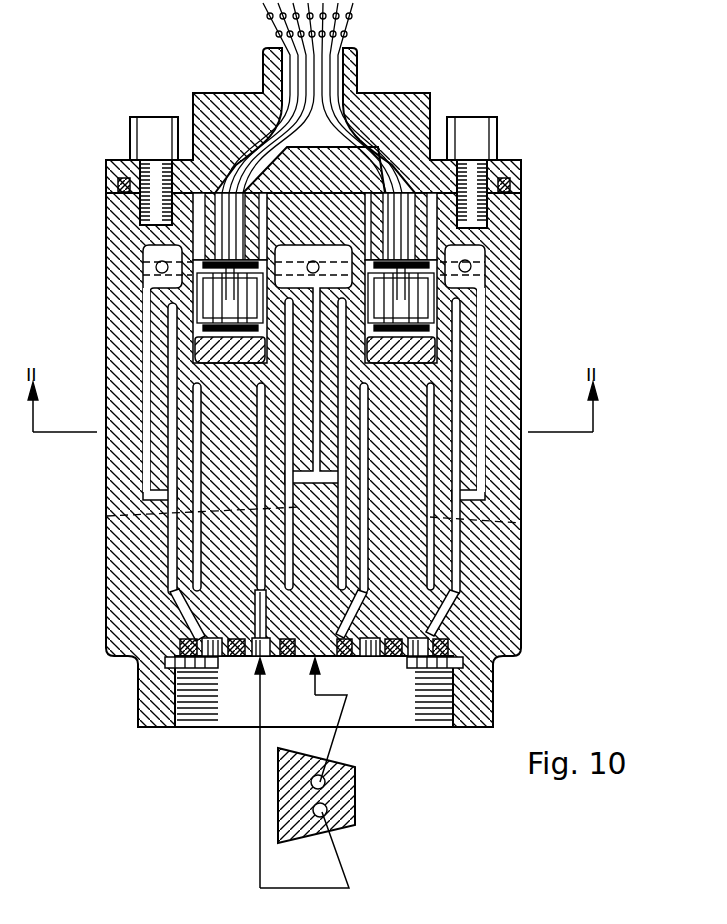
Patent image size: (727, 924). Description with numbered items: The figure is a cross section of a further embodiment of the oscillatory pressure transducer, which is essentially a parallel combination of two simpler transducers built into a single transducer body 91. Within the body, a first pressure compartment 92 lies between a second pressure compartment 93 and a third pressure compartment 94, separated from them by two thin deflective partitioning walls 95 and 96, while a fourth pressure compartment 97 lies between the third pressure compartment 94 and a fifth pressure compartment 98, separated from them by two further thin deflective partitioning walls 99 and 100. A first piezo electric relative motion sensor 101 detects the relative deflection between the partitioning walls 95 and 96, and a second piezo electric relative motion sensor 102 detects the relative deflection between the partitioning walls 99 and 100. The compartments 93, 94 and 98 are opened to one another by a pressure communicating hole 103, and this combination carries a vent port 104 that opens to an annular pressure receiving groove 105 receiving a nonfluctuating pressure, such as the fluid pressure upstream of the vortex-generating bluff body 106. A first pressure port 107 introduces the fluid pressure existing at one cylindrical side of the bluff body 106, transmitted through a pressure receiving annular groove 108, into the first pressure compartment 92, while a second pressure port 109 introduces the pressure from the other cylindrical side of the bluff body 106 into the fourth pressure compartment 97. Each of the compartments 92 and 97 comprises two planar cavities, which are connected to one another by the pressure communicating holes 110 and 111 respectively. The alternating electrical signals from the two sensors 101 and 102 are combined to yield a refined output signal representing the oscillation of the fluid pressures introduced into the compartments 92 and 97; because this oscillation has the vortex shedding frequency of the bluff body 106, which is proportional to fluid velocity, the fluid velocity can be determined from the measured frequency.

The transducer body 91 is at (130, 578).
The first pressure compartment 92 is at (200, 545).
The second pressure compartment 93 is at (172, 450).
The third pressure compartment 94 is at (448, 348).
The thin deflective partitioning wall 95 is at (146, 400).
The thin deflective partitioning wall 96 is at (165, 338).
The fourth pressure compartment 97 is at (370, 540).
The fifth pressure compartment 98 is at (470, 480).
The thin deflective partitioning wall 99 is at (435, 400).
The thin deflective partitioning wall 100 is at (445, 435).
The first piezo electric relative motion sensor 101 is at (225, 352).
The second piezo electric relative motion sensor 102 is at (420, 352).
The pressure communicating hole 103 is at (390, 150).
The vent port 104 is at (185, 605).
The pressure receiving groove 105 is at (172, 688).
The vortex-generating bluff body 106 is at (355, 800).
The first pressure port 107 is at (211, 658).
The pressure receiving annular groove 108 is at (368, 658).
The second pressure port 109 is at (290, 657).
The pressure communicating hole 110 is at (107, 514).
The pressure communicating hole 111 is at (521, 522).